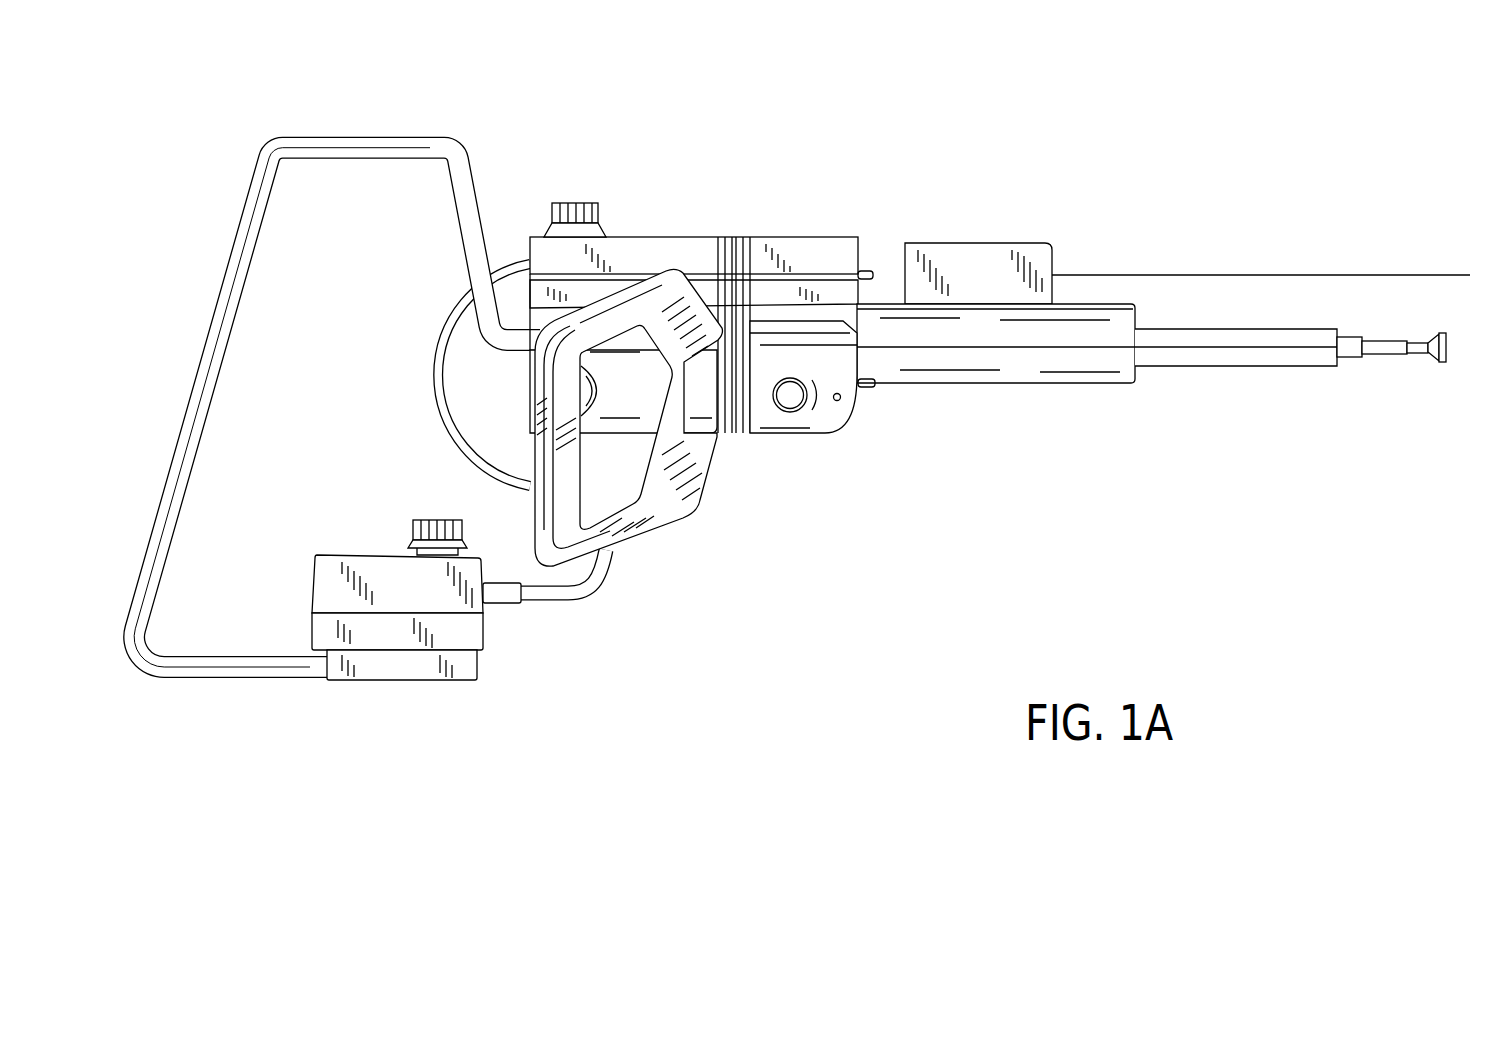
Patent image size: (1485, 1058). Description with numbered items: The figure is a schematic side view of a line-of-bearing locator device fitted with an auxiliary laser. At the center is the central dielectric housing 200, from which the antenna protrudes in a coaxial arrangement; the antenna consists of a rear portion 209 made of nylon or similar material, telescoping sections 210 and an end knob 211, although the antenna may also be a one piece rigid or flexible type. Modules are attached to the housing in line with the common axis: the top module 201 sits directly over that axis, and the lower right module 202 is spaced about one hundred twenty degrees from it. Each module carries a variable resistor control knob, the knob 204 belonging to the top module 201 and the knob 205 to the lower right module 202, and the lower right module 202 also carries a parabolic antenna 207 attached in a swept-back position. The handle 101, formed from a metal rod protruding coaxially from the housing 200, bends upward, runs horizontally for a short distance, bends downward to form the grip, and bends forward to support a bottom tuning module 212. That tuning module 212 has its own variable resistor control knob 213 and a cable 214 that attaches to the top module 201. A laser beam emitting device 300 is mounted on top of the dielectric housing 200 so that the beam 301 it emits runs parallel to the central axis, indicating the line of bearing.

The handle 101 is at (240, 318).
The central dielectric housing 200 is at (993, 330).
The top module 201 is at (822, 262).
The lower right module 202 is at (830, 410).
The variable resistor control knob 204 is at (590, 203).
The variable resistor control knob 205 is at (590, 383).
The parabolic antenna 207 is at (670, 508).
The rear portion 209 is at (1188, 345).
The telescoping sections 210 is at (1418, 358).
The end knob 211 is at (1433, 333).
The bottom tuning module 212 is at (487, 635).
The variable resistor control knob 213 is at (432, 520).
The cable 214 is at (553, 604).
The laser beam emitting device 300 is at (972, 243).
The beam 301 is at (1137, 275).